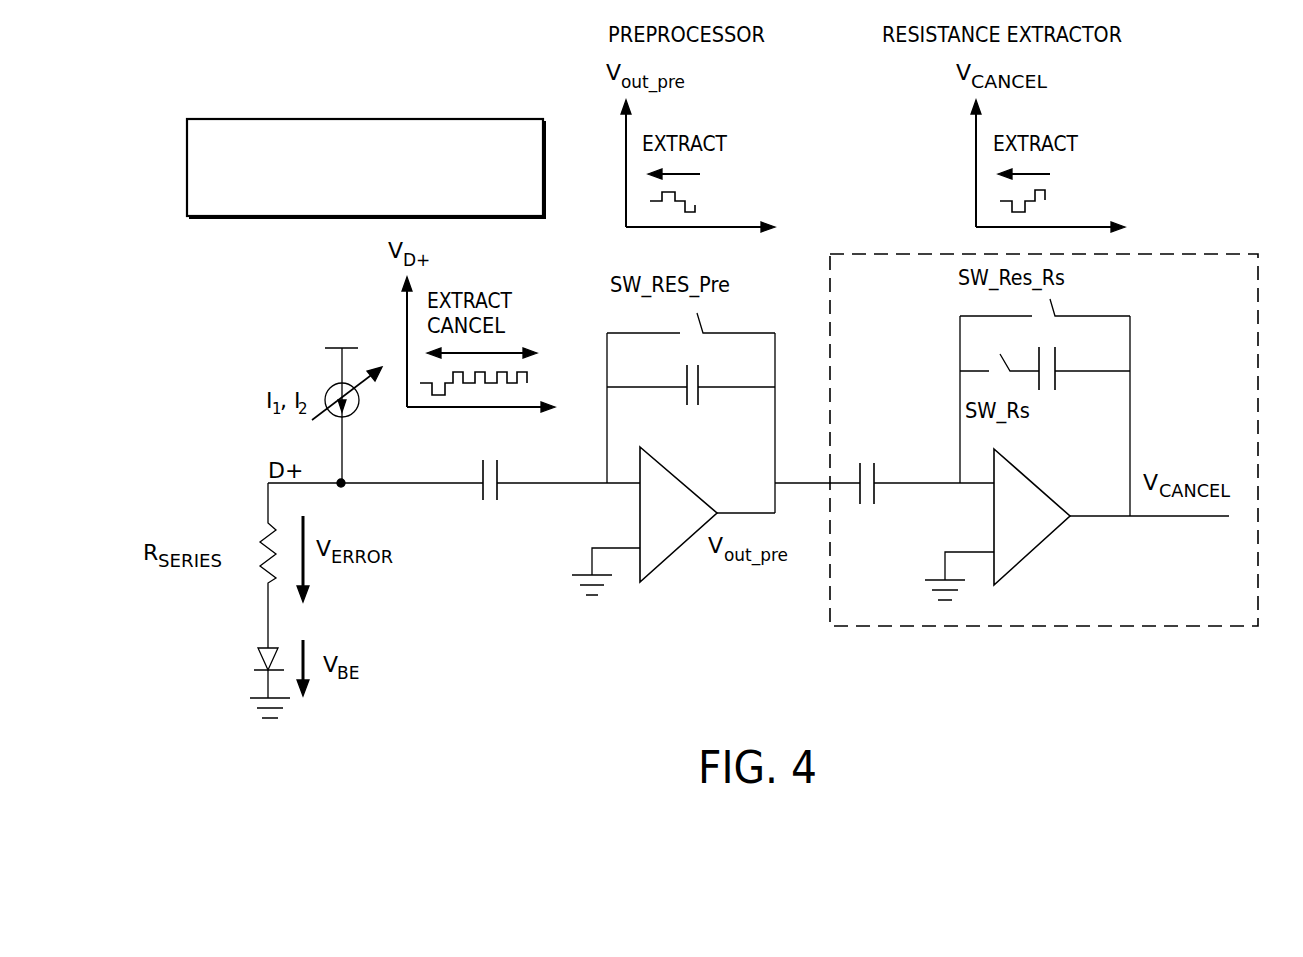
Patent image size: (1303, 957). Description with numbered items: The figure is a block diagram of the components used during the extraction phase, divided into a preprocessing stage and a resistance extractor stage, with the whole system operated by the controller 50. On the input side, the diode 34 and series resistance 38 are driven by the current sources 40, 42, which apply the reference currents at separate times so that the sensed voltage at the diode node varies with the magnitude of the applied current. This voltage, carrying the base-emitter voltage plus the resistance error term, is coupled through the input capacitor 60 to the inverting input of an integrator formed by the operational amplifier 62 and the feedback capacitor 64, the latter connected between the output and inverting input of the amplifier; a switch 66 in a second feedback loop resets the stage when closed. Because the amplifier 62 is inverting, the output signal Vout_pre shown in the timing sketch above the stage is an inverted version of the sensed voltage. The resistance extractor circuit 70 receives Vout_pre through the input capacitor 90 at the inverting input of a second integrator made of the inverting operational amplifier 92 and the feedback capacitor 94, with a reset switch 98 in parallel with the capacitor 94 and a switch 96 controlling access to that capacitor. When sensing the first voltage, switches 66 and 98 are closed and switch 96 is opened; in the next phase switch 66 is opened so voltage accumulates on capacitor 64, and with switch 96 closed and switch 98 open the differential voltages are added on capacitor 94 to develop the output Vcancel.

The controller 50 is at (428, 178).
The current source 40 is at (321, 415).
The additional current source 42 is at (333, 380).
The resistance 38 is at (266, 532).
The diode 34 is at (266, 648).
The input capacitor 60 is at (500, 466).
The operational amplifier 62 is at (682, 482).
The feedback capacitor 64 is at (701, 373).
The switch 66 is at (708, 318).
The resistance extractor circuit 70 is at (1003, 628).
The input capacitor 90 is at (877, 469).
The inverting operational amplifier 92 is at (1035, 483).
The feedback capacitor 94 is at (1058, 356).
The switch 96 is at (988, 366).
The switch 98 is at (1060, 302).